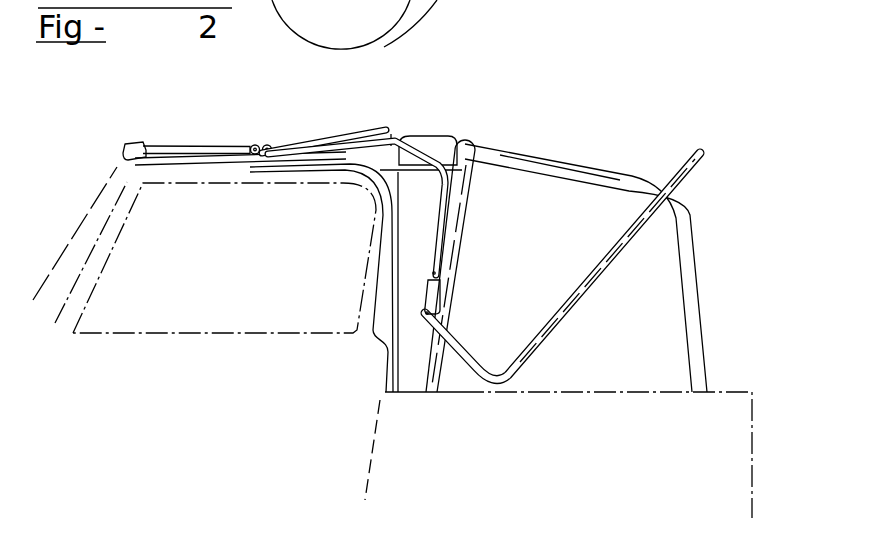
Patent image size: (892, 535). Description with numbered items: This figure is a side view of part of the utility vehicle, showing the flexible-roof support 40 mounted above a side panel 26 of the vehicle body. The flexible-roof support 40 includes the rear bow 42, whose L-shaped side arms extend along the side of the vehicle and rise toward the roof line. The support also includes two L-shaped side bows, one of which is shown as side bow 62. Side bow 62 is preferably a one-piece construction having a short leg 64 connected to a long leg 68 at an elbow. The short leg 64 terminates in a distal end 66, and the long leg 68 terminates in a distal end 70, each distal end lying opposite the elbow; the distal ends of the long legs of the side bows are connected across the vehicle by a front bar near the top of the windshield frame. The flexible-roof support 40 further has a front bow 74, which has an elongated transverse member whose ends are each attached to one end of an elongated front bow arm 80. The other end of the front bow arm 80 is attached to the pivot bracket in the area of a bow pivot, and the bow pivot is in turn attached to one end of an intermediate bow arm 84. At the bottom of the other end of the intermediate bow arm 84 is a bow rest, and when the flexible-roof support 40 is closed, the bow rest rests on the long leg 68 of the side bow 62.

The side panel 26 is at (443, 5).
The flexible-roof support 40 is at (520, 116).
The rear bow 42 is at (700, 160).
The L-shaped side bow 62 is at (433, 154).
The short leg 64 is at (430, 247).
The distal end of short leg 66 is at (430, 278).
The long leg 68 is at (200, 162).
The distal end of long leg 70 is at (120, 157).
The front bow 74 is at (133, 143).
The front bow arm 80 is at (217, 147).
The intermediate bow arm 84 is at (322, 140).